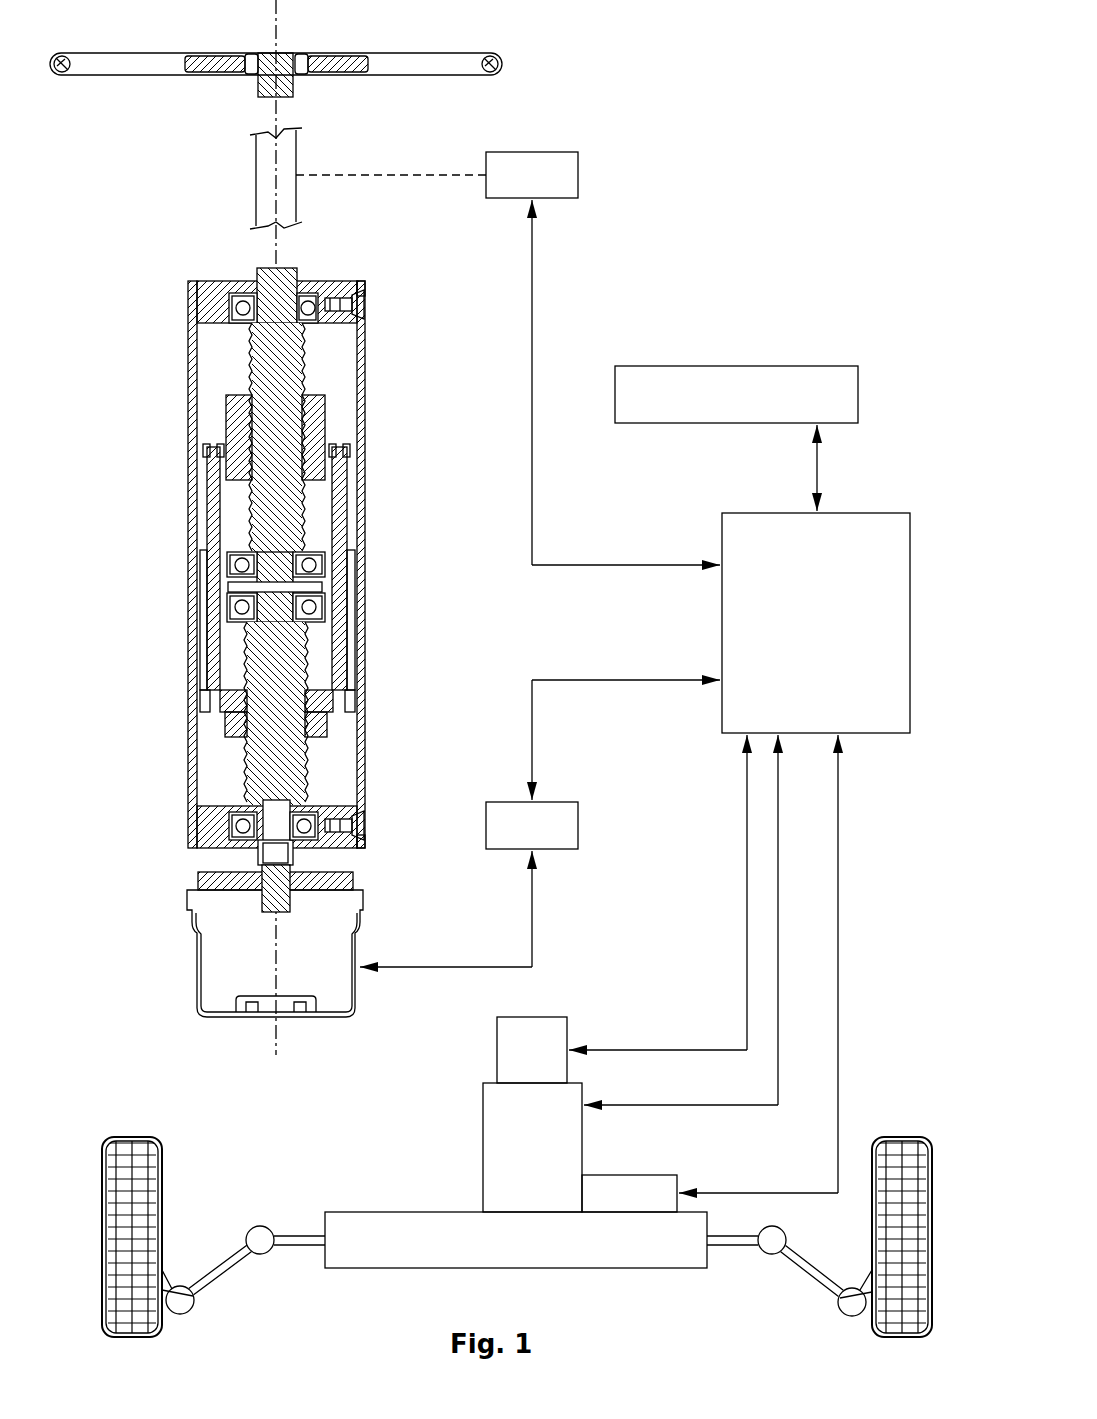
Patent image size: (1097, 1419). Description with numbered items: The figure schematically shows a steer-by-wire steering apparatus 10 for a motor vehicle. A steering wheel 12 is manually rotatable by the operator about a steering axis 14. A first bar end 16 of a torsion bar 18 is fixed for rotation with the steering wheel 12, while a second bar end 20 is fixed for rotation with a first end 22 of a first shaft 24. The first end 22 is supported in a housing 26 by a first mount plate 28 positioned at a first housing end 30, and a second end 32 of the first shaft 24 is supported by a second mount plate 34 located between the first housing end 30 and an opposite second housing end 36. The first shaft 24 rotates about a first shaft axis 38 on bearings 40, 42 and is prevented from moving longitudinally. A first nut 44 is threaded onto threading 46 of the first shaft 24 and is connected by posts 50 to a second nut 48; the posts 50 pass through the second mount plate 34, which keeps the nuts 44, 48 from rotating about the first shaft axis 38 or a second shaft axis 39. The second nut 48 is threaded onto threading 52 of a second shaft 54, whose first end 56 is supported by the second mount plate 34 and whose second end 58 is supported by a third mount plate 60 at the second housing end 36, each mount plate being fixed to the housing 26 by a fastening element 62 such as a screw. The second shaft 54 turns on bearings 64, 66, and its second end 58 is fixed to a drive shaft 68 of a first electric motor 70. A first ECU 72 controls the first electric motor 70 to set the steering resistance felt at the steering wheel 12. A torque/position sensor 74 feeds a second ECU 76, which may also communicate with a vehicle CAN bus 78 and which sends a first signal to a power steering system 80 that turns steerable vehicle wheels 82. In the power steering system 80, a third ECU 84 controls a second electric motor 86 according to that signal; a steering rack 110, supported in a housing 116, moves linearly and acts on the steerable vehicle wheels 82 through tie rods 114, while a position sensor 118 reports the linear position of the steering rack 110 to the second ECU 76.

The steering apparatus 10 is at (888, 170).
The steering wheel 12 is at (430, 62).
The steering axis 14 is at (292, 0).
The first bar end 16 is at (303, 135).
The torsion bar 18 is at (256, 181).
The second bar end 20 is at (305, 218).
The first end 22 is at (297, 270).
The first shaft 24 is at (263, 292).
The housing 26 is at (192, 405).
The first mount plate 28 is at (205, 302).
The first housing end 30 is at (365, 282).
The second end 32 is at (300, 555).
The second mount plate 34 is at (200, 583).
The second housing end 36 is at (362, 840).
The first shaft axis 38 is at (275, 483).
The second shaft axis 39 is at (275, 1040).
The bearing 40 is at (235, 317).
The bearing 42 is at (225, 545).
The first nut 44 is at (325, 410).
The threading 46 is at (306, 376).
The second nut 48 is at (318, 720).
The posts 50 is at (340, 645).
The threading 52 is at (308, 757).
The second shaft 54 is at (290, 665).
The first end 56 is at (330, 592).
The second end 58 is at (258, 842).
The third mount plate 60 is at (210, 828).
The fastening element 62 is at (370, 300).
The bearing 64 is at (235, 600).
The bearing 66 is at (240, 816).
The drive shaft 68 is at (283, 885).
The first electric motor 70 is at (195, 968).
The first electronic control unit 72 is at (568, 815).
The torque/position sensor 74 is at (568, 160).
The second electronic control unit 76 is at (873, 540).
The vehicle CAN bus 78 is at (790, 380).
The power steering system 80 is at (527, 1148).
The steerable vehicle wheels 82 is at (140, 1137).
The third electronic control unit 84 is at (552, 1040).
The second electric motor 86 is at (500, 1128).
The steering rack 110 is at (740, 1245).
The tie rod 114 is at (216, 1264).
The housing 116 is at (585, 1250).
The position sensor 118 is at (660, 1188).